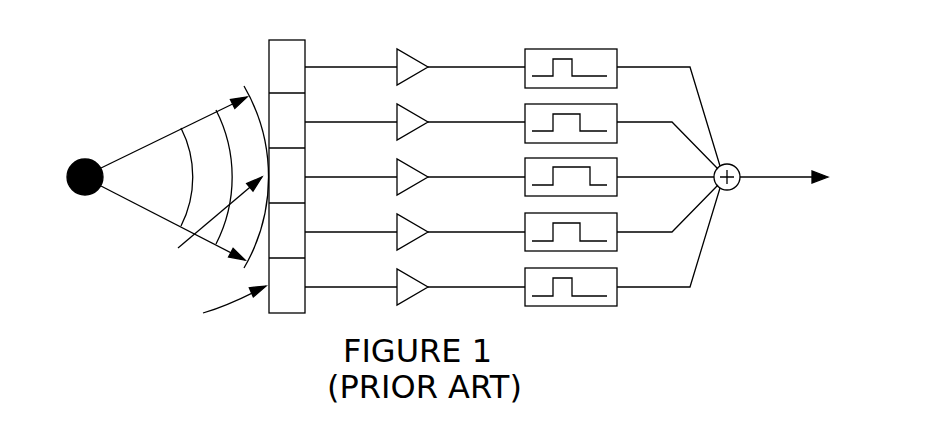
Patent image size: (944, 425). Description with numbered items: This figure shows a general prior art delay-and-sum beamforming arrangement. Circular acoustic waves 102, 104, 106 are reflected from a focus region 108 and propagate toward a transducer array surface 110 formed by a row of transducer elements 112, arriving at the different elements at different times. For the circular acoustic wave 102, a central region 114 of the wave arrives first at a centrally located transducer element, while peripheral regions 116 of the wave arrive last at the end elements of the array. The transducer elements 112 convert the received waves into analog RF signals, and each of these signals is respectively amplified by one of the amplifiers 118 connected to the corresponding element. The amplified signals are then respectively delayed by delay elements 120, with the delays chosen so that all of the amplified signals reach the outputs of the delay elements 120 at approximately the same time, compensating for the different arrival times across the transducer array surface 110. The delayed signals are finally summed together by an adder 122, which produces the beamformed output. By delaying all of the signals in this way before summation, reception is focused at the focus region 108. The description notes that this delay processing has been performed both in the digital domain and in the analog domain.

The circular acoustic wave 102 is at (250, 96).
The circular acoustic wave 104 is at (227, 148).
The circular acoustic wave 106 is at (176, 225).
The focus region 108 is at (82, 160).
The transducer array surface 110 is at (213, 305).
The transducer elements 112 is at (285, 40).
The central region 114 is at (186, 248).
The peripheral regions 116 is at (240, 97).
The amplifiers 118 is at (410, 53).
The delay elements 120 is at (573, 48).
The adder 122 is at (737, 165).